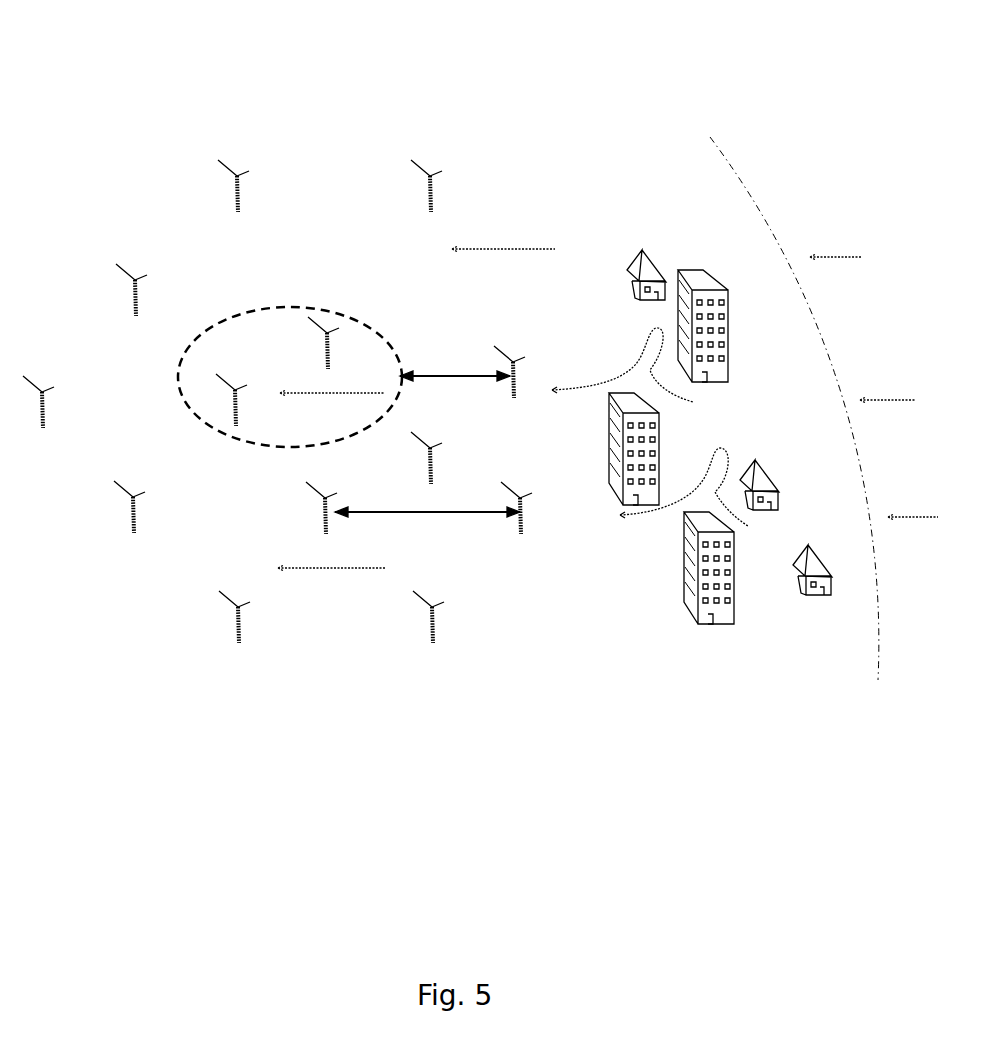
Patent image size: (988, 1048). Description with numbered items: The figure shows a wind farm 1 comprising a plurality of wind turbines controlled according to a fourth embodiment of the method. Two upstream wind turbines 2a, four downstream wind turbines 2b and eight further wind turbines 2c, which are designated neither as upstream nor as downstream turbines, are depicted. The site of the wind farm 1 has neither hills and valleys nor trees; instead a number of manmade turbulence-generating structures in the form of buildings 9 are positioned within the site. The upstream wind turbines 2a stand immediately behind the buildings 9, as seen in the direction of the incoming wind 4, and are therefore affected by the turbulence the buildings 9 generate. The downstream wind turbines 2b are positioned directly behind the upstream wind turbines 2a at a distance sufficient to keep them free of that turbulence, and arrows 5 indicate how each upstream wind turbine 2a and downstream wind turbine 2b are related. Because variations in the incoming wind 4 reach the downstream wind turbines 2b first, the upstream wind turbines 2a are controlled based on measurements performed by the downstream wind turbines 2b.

The wind farm 1 is at (162, 92).
The upstream wind turbine 2a is at (520, 376).
The downstream wind turbine 2b is at (330, 355).
The wind turbine 2c is at (133, 282).
The incoming wind 4 is at (512, 249).
The arrows 5 is at (445, 375).
The buildings 9 is at (697, 273).